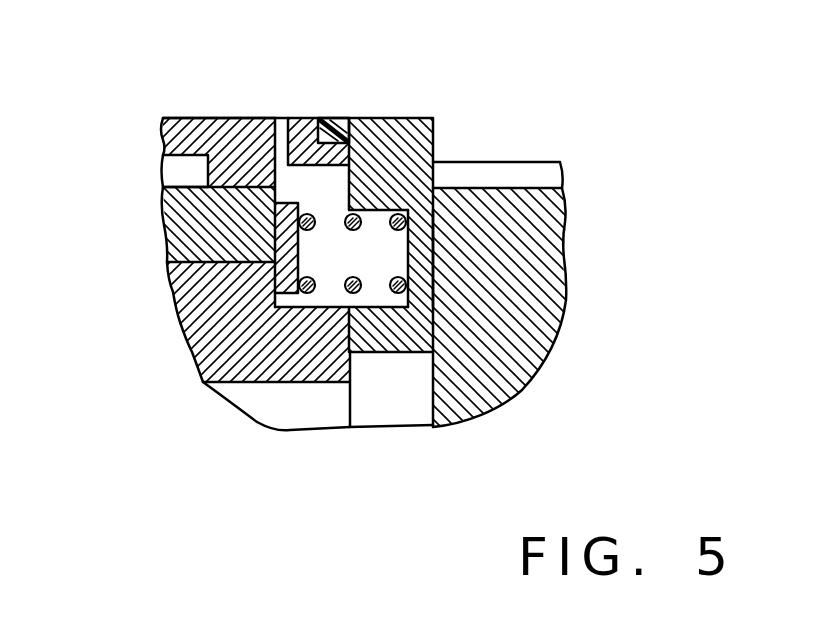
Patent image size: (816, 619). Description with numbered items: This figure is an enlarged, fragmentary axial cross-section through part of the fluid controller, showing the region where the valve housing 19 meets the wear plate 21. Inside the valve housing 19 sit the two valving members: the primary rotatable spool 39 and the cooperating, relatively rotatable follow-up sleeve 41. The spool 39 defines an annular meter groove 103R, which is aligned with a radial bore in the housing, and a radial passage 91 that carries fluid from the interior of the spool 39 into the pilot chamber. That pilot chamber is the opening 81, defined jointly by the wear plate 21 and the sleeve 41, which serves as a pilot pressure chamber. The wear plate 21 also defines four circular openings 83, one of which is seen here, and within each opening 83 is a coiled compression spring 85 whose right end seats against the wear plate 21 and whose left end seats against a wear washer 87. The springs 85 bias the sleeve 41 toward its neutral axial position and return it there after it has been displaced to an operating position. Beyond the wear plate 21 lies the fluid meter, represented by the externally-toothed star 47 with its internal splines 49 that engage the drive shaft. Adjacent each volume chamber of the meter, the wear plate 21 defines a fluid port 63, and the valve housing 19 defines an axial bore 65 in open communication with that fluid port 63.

The valve housing 19 is at (192, 310).
The wear plate 21 is at (387, 132).
The spool 39 is at (194, 128).
The sleeve 41 is at (178, 212).
The star member 47 is at (527, 281).
The internal splines 49 is at (518, 172).
The fluid port 63 is at (390, 393).
The axial bore 65 is at (275, 405).
The opening 81 is at (306, 263).
The circular opening 83 is at (404, 248).
The coiled compression spring 85 is at (394, 296).
The wear washer 87 is at (285, 274).
The radial passage 91 is at (286, 128).
The annular meter groove 103R is at (173, 173).